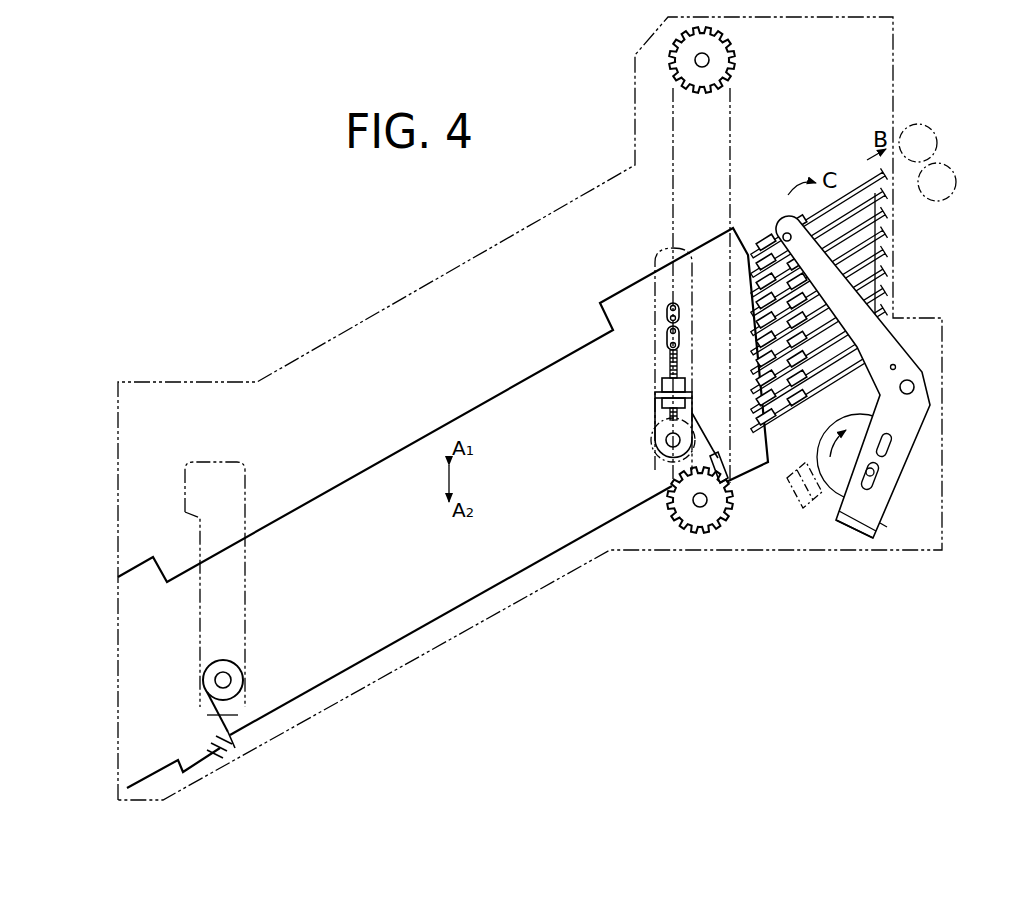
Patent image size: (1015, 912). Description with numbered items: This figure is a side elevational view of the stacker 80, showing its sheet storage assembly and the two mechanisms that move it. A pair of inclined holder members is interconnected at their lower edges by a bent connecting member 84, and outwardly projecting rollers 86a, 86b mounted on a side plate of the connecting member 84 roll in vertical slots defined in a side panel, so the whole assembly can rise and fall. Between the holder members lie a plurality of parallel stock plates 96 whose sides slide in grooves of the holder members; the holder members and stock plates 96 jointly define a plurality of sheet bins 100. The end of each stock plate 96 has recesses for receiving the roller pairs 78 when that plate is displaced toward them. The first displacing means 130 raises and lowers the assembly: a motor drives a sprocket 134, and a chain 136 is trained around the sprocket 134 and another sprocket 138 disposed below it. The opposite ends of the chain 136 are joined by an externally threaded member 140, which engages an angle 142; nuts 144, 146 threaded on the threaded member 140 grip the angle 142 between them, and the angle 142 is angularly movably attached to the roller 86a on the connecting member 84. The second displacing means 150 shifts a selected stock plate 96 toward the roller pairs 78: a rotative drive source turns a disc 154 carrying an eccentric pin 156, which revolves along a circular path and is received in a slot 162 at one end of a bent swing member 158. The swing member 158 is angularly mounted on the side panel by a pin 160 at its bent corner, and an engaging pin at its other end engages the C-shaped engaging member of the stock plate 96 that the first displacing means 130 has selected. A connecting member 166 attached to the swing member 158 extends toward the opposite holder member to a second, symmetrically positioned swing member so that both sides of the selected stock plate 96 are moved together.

The roller pairs 78 is at (914, 143).
The stacker 80 is at (450, 252).
The connecting member 84 is at (373, 662).
The roller 86a is at (655, 442).
The roller 86b is at (238, 685).
The stock plates 96 is at (878, 180).
The sheet bins 100 is at (857, 200).
The first displacing means 130 is at (748, 51).
The sprocket 134 is at (722, 72).
The chain 136 is at (672, 197).
The sprocket 138 is at (700, 534).
The externally threaded member 140 is at (667, 360).
The angle 142 is at (655, 412).
The nut 144 is at (655, 396).
The nut 146 is at (662, 385).
The second displacing means 150 is at (930, 405).
The disc 154 is at (828, 477).
The pin 156 is at (877, 473).
The swing member 158 is at (812, 458).
The pin 160 is at (915, 387).
The slot 162 is at (907, 443).
The connecting member 166 is at (808, 537).